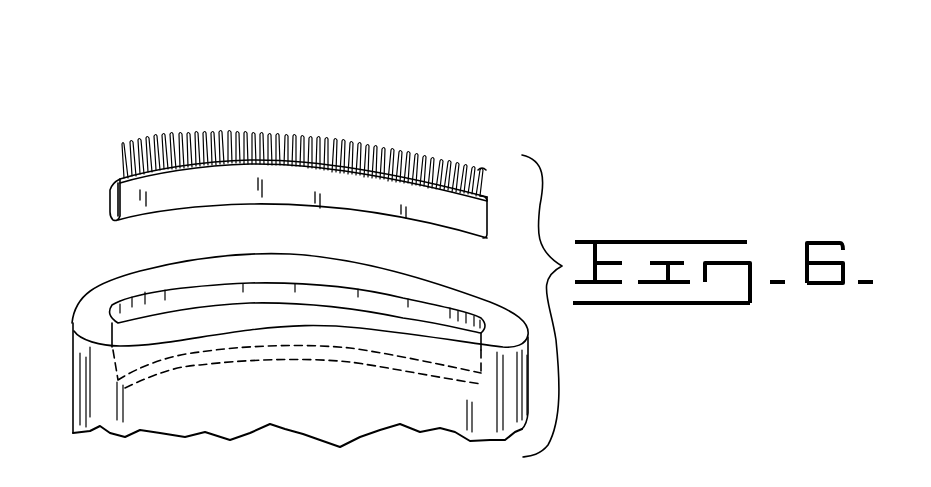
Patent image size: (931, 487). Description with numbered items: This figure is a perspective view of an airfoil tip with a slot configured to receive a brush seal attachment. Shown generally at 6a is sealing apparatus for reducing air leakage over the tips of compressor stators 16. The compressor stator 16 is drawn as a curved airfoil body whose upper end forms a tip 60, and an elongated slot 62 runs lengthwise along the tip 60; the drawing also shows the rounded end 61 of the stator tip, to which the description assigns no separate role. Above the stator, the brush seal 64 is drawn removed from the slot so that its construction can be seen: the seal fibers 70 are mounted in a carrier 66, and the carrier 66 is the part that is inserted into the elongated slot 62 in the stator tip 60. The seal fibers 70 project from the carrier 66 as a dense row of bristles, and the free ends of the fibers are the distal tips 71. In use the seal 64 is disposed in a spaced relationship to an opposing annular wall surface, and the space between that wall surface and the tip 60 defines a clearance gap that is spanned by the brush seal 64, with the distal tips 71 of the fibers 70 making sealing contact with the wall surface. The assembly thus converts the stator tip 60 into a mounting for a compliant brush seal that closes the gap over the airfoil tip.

The sealing apparatus 6a is at (225, 70).
The brush seal 64 is at (497, 157).
The carrier 66 is at (478, 226).
The seal fibers 70 is at (485, 184).
The distal tips 71 is at (483, 171).
The elongated slot 62 is at (156, 302).
The tip 60 is at (107, 297).
The rounded end of base 61 is at (88, 320).
The compressor stator 16 is at (273, 347).